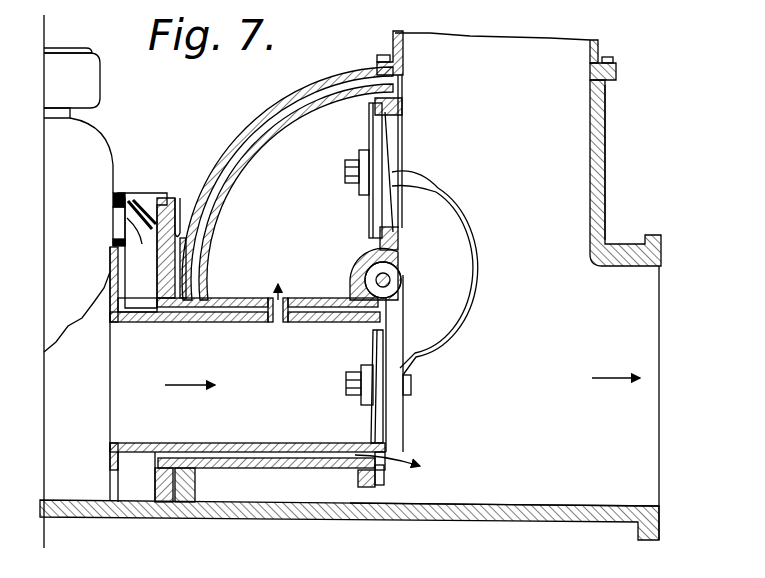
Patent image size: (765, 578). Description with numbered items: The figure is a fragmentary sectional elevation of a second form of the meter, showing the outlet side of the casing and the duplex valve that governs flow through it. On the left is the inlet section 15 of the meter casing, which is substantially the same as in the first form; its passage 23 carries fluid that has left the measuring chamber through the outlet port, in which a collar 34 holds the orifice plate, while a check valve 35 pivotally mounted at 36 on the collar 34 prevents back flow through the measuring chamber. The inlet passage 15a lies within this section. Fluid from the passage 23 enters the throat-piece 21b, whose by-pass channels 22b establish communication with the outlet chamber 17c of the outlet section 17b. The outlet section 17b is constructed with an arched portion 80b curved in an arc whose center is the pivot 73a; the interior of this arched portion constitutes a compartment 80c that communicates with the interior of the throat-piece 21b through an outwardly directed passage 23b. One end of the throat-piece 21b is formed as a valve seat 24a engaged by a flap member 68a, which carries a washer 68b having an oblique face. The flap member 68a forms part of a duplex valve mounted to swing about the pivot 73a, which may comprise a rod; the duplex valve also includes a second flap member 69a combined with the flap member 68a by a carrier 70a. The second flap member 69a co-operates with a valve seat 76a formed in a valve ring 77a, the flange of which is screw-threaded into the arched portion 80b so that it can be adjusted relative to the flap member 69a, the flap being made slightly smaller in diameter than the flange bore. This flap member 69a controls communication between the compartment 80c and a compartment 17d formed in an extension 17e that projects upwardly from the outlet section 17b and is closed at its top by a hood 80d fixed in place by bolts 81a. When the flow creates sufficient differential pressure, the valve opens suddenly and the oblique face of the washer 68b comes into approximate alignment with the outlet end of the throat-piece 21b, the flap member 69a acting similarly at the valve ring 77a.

The inlet section 15 is at (80, 518).
The inlet pipe passage 15a is at (77, 335).
The outlet section 17b is at (553, 521).
The outlet chamber 17c is at (605, 403).
The compartment 17d is at (556, 126).
The extension 17e is at (604, 180).
The throat-piece 21b is at (224, 322).
The by-pass channels 22b is at (284, 460).
The passage 23 is at (138, 302).
The outwardly directed passage 23b is at (286, 298).
The valve seat 24a is at (368, 446).
The collar 34 is at (142, 250).
The check valve 35 is at (152, 206).
The pivot 36 is at (127, 198).
The flap member 68a is at (395, 426).
The washer 68b is at (373, 358).
The second flap member 69a is at (377, 150).
The carrier 70a is at (481, 254).
The pivot 73a is at (392, 280).
The valve seat 76a is at (400, 236).
The valve ring 77a is at (404, 110).
The arched portion 80b is at (269, 108).
The compartment 80c is at (294, 230).
The hood 80d is at (600, 50).
The bolts 81a is at (377, 58).